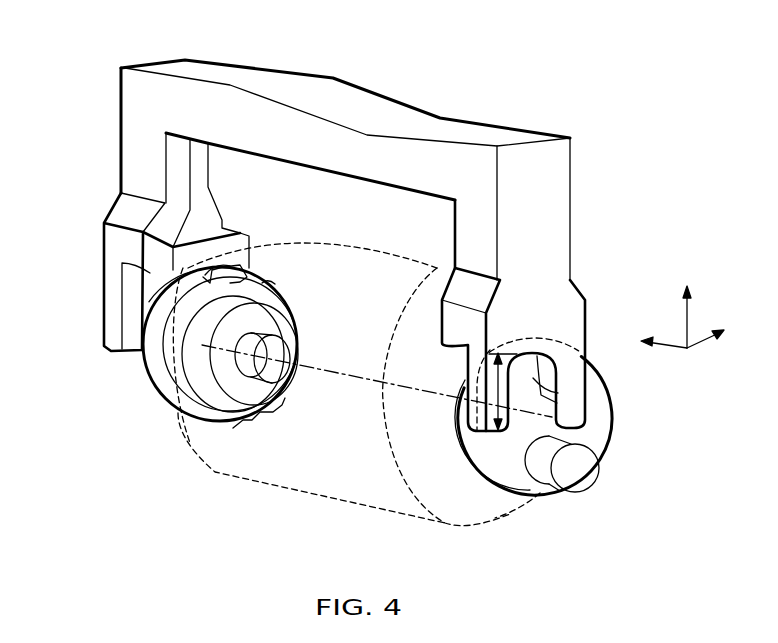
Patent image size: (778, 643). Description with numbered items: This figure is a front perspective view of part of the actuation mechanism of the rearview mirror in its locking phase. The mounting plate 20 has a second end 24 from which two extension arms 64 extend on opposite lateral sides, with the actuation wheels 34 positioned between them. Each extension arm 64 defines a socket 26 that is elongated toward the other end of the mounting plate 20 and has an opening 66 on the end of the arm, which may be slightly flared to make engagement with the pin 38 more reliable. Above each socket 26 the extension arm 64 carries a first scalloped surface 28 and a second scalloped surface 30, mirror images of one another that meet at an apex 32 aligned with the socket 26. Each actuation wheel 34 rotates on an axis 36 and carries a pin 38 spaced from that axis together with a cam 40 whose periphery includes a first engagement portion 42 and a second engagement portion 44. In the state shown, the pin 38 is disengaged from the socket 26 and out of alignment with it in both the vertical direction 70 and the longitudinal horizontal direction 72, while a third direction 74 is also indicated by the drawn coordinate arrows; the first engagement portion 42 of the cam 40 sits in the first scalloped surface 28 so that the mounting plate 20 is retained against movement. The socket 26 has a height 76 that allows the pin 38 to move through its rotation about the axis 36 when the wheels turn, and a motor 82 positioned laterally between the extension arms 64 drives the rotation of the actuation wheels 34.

The mounting plate 20 is at (547, 92).
The second end 24 is at (288, 122).
The socket 26 is at (585, 398).
The first scalloped surface 28 is at (248, 270).
The second scalloped surface 30 is at (150, 283).
The apex 32 is at (204, 279).
The actuation wheel 34 is at (118, 389).
The axis 36 is at (357, 380).
The pin 38 is at (585, 478).
The cam 40 is at (183, 356).
The first engagement portion 42 is at (258, 290).
The second engagement portion 44 is at (259, 422).
The extension arm 64 is at (112, 240).
The opening 66 is at (540, 493).
The vertical direction 70 is at (687, 318).
The longitudinal horizontal direction 72 is at (703, 347).
The longitudinal direction 74 is at (663, 350).
The height 76 is at (470, 403).
The motor 82 is at (183, 447).